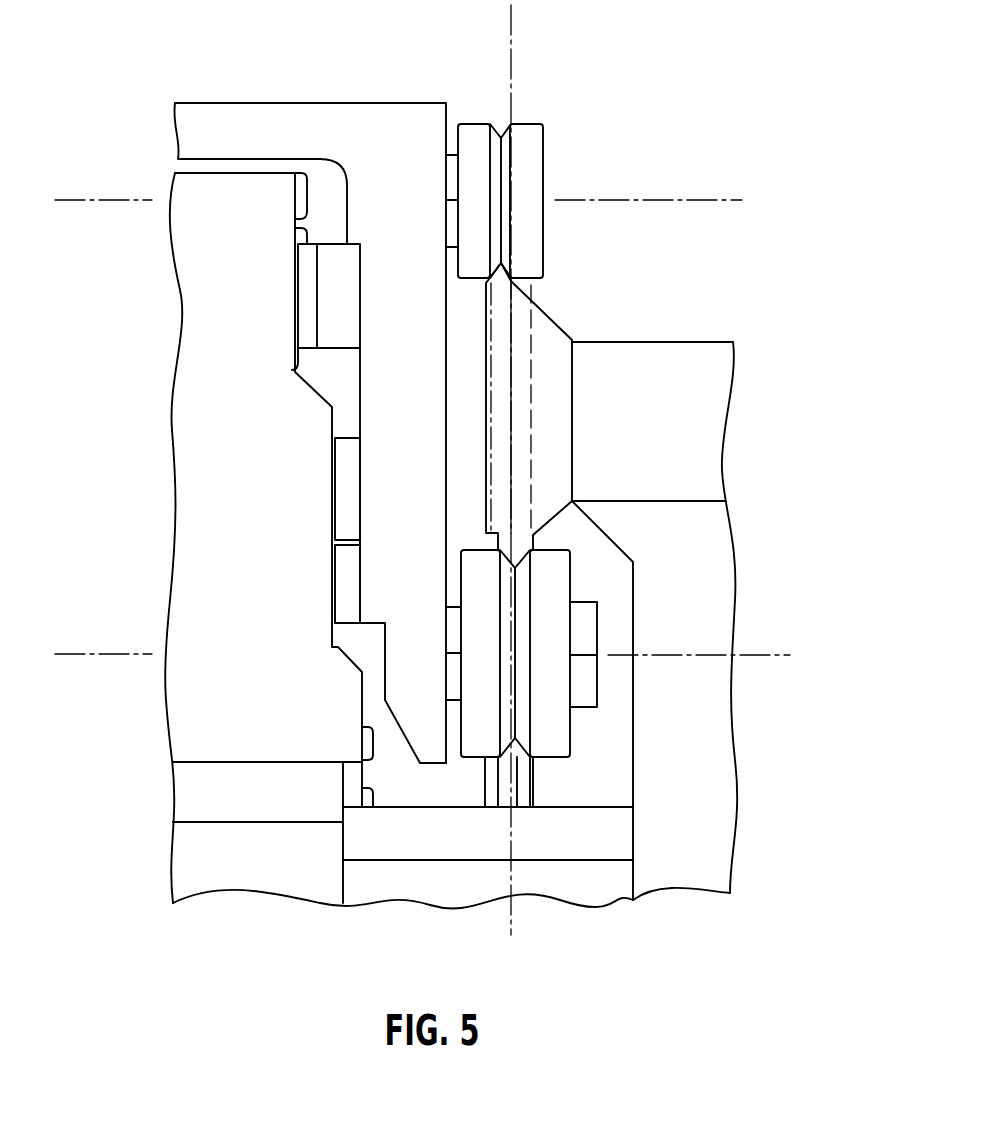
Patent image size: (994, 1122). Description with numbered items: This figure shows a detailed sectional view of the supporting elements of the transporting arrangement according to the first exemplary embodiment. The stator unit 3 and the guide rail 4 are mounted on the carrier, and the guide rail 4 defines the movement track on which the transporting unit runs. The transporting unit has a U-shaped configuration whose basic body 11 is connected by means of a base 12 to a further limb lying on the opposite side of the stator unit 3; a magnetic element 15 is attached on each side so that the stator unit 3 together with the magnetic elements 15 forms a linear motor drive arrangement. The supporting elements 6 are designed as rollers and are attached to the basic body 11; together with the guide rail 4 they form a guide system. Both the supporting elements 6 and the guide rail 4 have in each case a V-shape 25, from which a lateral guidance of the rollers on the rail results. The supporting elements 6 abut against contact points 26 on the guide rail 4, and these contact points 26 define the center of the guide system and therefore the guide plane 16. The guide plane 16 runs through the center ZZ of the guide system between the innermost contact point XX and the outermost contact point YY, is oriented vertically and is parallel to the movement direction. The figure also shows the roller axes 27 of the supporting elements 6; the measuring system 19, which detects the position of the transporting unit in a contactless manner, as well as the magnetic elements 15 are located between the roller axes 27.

The stator unit 3 is at (200, 255).
The guide rail 4 is at (545, 330).
The supporting element 6 is at (527, 160).
The basic body 11 is at (385, 420).
The base 12 is at (233, 125).
The magnetic element 15 is at (340, 308).
The guide plane 16 is at (512, 27).
The measuring system 19 is at (337, 490).
The V-shape 25 is at (507, 222).
The contact point 26 is at (507, 266).
The roller axis 27 is at (718, 200).
The innermost contact point XX is at (491, 358).
The center of the guide system ZZ is at (512, 398).
The outermost contact point YY is at (532, 430).